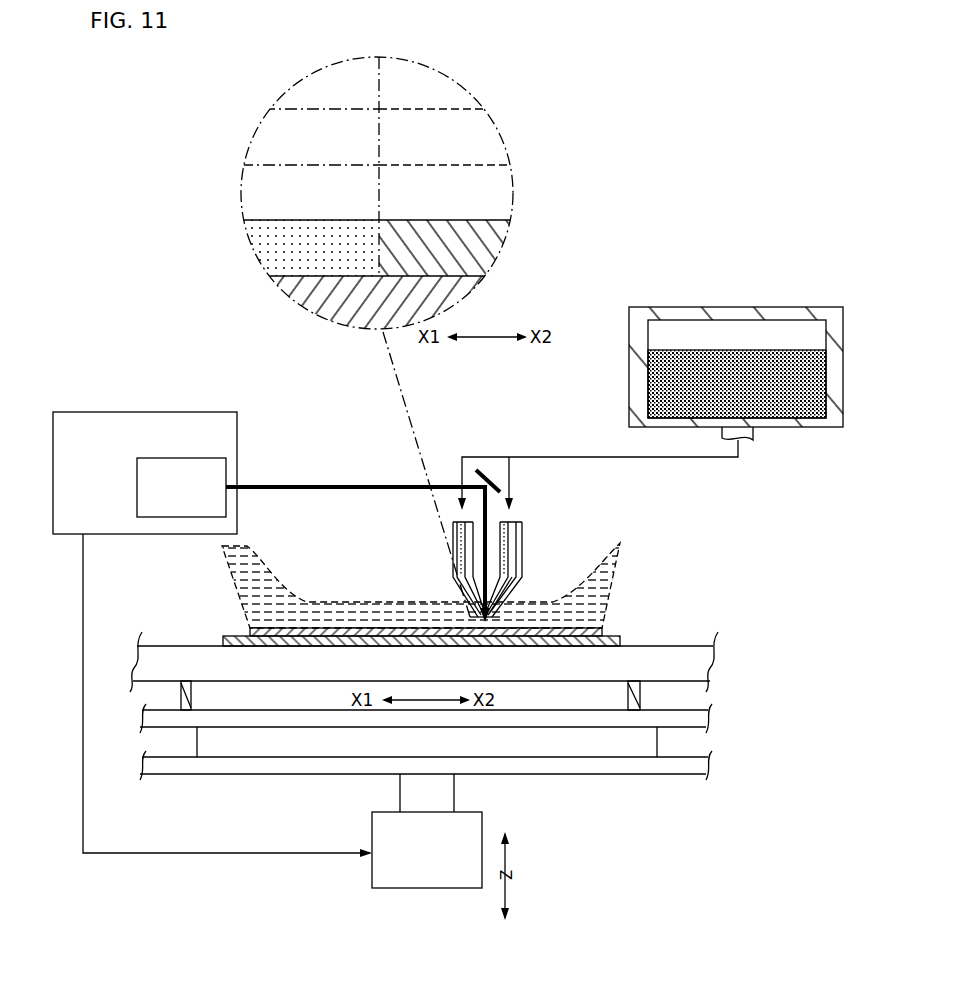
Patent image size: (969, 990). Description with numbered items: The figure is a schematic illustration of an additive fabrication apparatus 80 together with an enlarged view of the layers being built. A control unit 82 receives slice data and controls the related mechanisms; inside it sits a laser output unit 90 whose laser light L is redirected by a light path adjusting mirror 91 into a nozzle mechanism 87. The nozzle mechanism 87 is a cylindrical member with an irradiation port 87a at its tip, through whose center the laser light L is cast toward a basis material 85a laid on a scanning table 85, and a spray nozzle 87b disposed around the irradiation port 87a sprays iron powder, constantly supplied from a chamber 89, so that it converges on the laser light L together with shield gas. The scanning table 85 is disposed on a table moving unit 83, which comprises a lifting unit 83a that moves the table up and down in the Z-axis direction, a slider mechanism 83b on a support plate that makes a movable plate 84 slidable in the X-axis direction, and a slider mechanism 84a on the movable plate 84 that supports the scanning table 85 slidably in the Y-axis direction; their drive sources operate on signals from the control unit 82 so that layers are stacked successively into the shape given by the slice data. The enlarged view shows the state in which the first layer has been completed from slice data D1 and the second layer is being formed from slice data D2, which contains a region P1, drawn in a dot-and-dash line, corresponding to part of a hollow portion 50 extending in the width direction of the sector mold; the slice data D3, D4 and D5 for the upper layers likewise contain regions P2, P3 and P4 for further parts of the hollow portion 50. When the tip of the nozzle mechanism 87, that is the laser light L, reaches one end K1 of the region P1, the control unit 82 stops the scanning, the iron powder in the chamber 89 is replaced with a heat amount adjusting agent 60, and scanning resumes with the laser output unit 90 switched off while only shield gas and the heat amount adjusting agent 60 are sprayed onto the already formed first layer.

The hollow portion 50 is at (358, 620).
The heat amount adjusting agent 60 is at (708, 350).
The additive fabrication apparatus 80 is at (454, 403).
The control unit 82 is at (180, 412).
The table moving unit 83 is at (770, 665).
The lifting unit 83a is at (467, 838).
The slider mechanism 83b is at (613, 746).
The movable plate 84 is at (670, 725).
The slider mechanism 84a is at (640, 698).
The scanning table 85 is at (700, 642).
The basis material 85a is at (620, 637).
The nozzle mechanism 87 is at (522, 522).
The irradiation port 87a is at (517, 592).
The spray nozzle 87b is at (470, 636).
The chamber 89 is at (629, 360).
The laser output unit 90 is at (158, 458).
The light path adjusting mirror 91 is at (486, 474).
The laser light L is at (393, 480).
The one end of the region in the width direction K1 is at (377, 182).
The slice data for the first layer D1 is at (198, 618).
The slice data for the second layer D2 is at (250, 632).
The slice data for an upper layer D3 is at (522, 195).
The slice data for an upper layer D4 is at (522, 140).
The slice data for an upper layer D5 is at (522, 90).
The region P1 is at (314, 248).
The region P2 is at (314, 195).
The region P3 is at (314, 140).
The region P4 is at (314, 90).